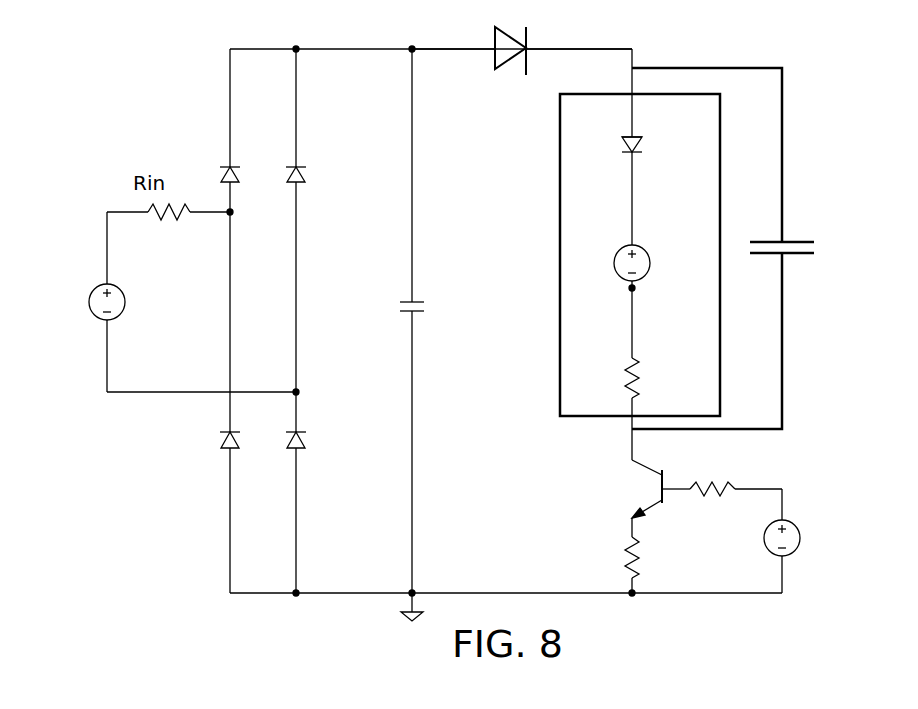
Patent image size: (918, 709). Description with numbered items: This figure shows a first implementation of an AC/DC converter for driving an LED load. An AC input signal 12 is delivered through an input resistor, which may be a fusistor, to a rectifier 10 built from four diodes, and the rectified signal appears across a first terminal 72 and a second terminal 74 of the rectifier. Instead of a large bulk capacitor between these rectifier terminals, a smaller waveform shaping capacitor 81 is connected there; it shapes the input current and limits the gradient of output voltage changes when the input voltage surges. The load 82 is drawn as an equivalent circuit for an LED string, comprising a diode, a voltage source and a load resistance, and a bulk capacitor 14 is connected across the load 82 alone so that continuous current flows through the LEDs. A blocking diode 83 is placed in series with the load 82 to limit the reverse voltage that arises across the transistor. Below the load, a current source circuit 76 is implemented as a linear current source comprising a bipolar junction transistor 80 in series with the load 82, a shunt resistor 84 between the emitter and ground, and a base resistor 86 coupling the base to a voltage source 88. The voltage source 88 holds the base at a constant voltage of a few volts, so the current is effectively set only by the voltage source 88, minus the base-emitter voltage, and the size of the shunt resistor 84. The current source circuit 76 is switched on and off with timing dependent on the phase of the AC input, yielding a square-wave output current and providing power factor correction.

The rectifier 10 is at (228, 486).
The AC input signal 12 is at (125, 308).
The bulk capacitor 14 is at (800, 242).
The first terminal 72 is at (412, 49).
The second terminal 74 is at (412, 593).
The current source circuit 76 is at (602, 508).
The bipolar junction transistor 80 is at (652, 503).
The waveform shaping capacitor 81 is at (418, 316).
The load 82 is at (560, 207).
The blocking diode 83 is at (526, 40).
The shunt resistor 84 is at (628, 567).
The base resistor 86 is at (718, 486).
The voltage source 88 is at (800, 518).